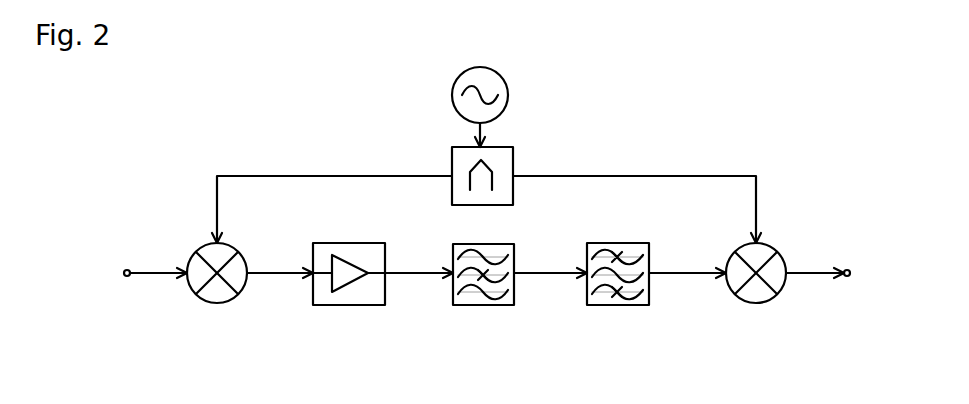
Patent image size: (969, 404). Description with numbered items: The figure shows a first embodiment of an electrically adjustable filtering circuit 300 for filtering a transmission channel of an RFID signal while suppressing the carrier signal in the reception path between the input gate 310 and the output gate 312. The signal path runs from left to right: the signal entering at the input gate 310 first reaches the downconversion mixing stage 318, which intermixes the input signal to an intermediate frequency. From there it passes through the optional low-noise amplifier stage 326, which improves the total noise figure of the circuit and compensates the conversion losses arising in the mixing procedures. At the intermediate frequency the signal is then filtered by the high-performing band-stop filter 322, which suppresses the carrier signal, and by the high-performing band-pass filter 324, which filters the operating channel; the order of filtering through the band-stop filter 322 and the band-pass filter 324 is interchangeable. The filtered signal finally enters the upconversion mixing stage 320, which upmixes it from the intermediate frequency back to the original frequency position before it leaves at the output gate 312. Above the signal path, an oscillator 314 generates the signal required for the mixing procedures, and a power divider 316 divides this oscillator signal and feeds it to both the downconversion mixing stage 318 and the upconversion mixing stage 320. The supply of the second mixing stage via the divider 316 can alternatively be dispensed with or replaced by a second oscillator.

The filtering circuit 300 is at (767, 130).
The input gate 310 is at (155, 260).
The output gate 312 is at (818, 260).
The oscillator 314 is at (499, 107).
The power divider 316 is at (499, 167).
The downconversion mixing stage 318 is at (217, 288).
The upconversion mixing stage 320 is at (756, 288).
The band-stop filter 322 is at (483, 288).
The band-pass filter 324 is at (618, 288).
The low-noise amplifier stage 326 is at (349, 288).